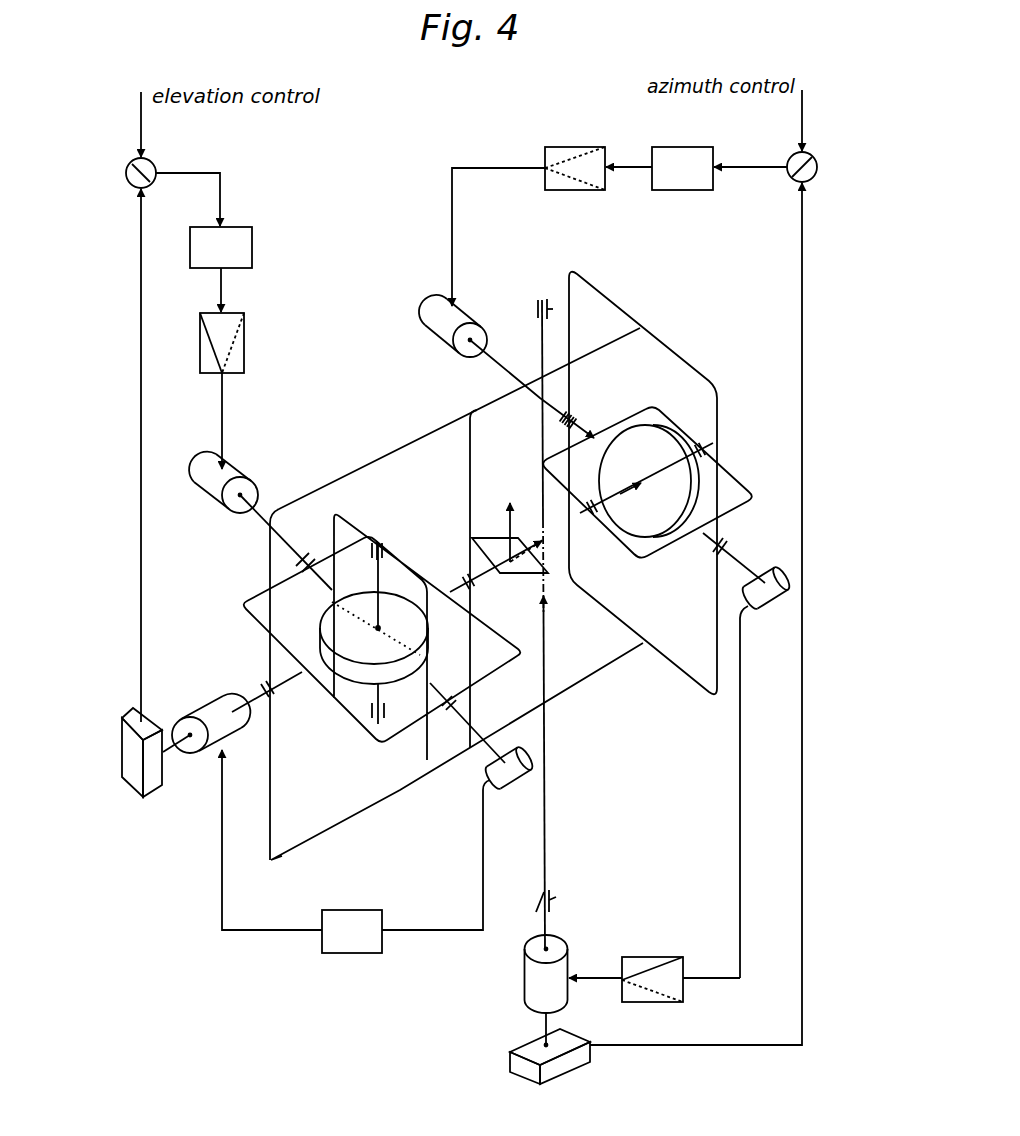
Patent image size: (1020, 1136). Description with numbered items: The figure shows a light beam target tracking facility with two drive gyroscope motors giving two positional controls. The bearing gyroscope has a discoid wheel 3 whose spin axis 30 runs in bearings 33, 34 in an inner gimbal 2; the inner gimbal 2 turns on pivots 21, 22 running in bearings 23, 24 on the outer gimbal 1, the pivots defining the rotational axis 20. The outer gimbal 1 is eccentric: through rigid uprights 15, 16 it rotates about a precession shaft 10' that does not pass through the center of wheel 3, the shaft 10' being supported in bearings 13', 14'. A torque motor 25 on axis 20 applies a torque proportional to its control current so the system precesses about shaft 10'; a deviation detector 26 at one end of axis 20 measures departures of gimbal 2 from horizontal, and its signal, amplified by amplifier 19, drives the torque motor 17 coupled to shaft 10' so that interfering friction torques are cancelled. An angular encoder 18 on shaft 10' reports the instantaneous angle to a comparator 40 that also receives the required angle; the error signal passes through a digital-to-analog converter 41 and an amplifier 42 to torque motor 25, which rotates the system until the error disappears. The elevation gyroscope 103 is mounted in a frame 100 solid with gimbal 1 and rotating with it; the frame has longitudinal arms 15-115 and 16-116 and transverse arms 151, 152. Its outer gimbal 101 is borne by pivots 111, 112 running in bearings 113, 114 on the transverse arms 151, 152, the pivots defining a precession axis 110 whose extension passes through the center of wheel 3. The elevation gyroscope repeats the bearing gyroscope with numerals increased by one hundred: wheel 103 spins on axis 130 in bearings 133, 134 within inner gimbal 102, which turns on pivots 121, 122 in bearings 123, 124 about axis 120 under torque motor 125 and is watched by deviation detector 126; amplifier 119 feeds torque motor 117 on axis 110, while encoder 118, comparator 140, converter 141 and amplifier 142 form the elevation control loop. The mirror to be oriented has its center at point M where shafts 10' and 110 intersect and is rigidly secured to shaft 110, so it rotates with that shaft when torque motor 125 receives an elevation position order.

The outer gimbal 1 is at (692, 350).
The inner gimbal 2 is at (640, 406).
The discoid wheel 3 is at (648, 432).
The precession axis 10' is at (564, 624).
The coupling 13' is at (563, 883).
The coupling 14' is at (531, 301).
The upright 15 is at (593, 678).
The upright 16 is at (590, 356).
The torque motor 17 is at (524, 985).
The angular encoder 18 is at (510, 1062).
The amplifier 19 is at (650, 957).
The rotational axis 20 is at (585, 442).
The pivot 21 is at (510, 372).
The pivot 22 is at (750, 572).
The bearing 23 is at (574, 418).
The bearing 24 is at (712, 560).
The torque motor 25 is at (430, 300).
The deviation detector 26 is at (778, 602).
The spin axis 30 is at (643, 486).
The bearing 33 is at (594, 518).
The bearing 34 is at (700, 443).
The comparator 40 is at (790, 181).
The digital-to-analog converter 41 is at (683, 190).
The amplifier 42 is at (575, 190).
The frame 100 is at (358, 812).
The outer gimbal 101 is at (243, 604).
The inner gimbal 102 is at (345, 513).
The elevation gyroscope 103 is at (321, 630).
The precession axis 110 is at (430, 600).
The pivot 111 is at (296, 680).
The pivot 112 is at (496, 578).
The bearing 113 is at (262, 688).
The bearing 114 is at (464, 577).
The longitudinal arm 115 is at (520, 716).
The longitudinal arm 116 is at (512, 392).
The torque motor 117 is at (208, 706).
The angular encoder 118 is at (158, 790).
The amplifier 119 is at (352, 953).
The rotational axis 120 is at (405, 655).
The pivot 121 is at (316, 582).
The pivot 122 is at (448, 694).
The bearing 123 is at (306, 556).
The bearing 124 is at (455, 712).
The torque motor 125 is at (244, 458).
The deviation detector 126 is at (524, 772).
The spin axis 130 is at (379, 580).
The bearing 133 is at (370, 552).
The bearing 134 is at (386, 708).
The comparator 140 is at (154, 185).
The digital-to-analog converter 141 is at (252, 244).
The amplifier 142 is at (244, 343).
The transverse arm 151 is at (272, 780).
The transverse arm 152 is at (472, 490).
The mirror center position M is at (530, 578).